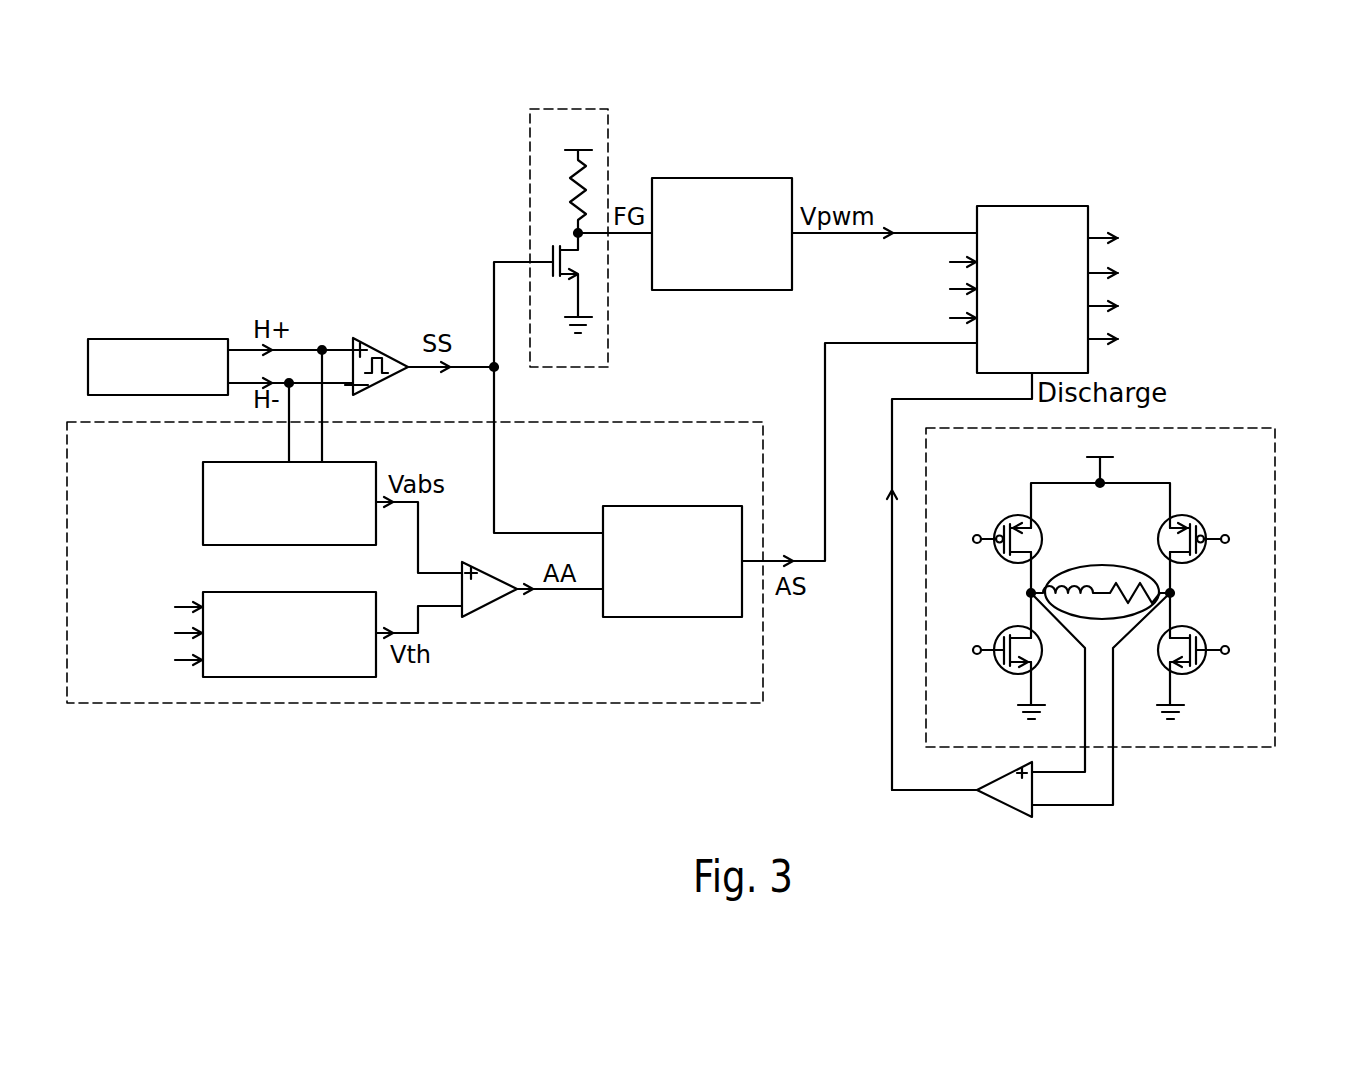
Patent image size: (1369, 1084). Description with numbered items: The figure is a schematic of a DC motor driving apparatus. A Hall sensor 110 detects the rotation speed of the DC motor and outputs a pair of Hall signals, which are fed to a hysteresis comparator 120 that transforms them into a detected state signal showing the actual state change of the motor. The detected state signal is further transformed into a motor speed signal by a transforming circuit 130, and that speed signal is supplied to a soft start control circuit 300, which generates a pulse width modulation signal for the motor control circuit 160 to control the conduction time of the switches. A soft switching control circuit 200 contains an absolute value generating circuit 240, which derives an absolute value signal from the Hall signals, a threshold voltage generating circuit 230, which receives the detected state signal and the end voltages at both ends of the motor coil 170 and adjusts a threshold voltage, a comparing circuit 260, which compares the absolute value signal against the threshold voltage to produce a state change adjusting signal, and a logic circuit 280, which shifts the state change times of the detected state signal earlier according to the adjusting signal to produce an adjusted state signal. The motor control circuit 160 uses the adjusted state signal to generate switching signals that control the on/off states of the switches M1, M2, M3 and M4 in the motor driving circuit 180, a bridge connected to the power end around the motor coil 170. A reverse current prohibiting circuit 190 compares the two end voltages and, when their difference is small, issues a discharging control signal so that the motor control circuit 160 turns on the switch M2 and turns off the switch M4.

The Hall sensor 110 is at (127, 339).
The hysteresis comparator 120 is at (370, 338).
The transforming circuit 130 is at (530, 188).
The motor control circuit 160 is at (1060, 206).
The motor coil 170 is at (1073, 565).
The motor driving circuit 180 is at (1128, 551).
The reverse current prohibiting circuit 190 is at (1003, 808).
The soft switching control circuit 200 is at (690, 422).
The threshold voltage generating circuit 230 is at (220, 592).
The absolute value generating circuit 240 is at (203, 500).
The comparing circuit 260 is at (465, 558).
The logic circuit 280 is at (642, 506).
The soft start control circuit 300 is at (690, 178).
The switch M1 is at (1000, 520).
The switch M2 is at (1200, 520).
The switch M3 is at (1000, 668).
The switch M4 is at (1200, 668).